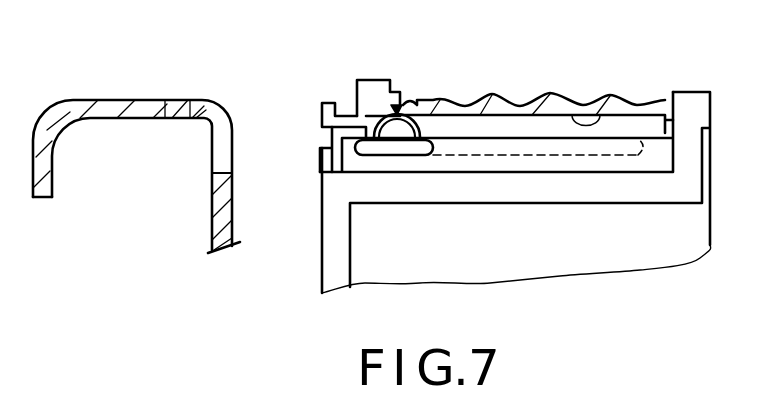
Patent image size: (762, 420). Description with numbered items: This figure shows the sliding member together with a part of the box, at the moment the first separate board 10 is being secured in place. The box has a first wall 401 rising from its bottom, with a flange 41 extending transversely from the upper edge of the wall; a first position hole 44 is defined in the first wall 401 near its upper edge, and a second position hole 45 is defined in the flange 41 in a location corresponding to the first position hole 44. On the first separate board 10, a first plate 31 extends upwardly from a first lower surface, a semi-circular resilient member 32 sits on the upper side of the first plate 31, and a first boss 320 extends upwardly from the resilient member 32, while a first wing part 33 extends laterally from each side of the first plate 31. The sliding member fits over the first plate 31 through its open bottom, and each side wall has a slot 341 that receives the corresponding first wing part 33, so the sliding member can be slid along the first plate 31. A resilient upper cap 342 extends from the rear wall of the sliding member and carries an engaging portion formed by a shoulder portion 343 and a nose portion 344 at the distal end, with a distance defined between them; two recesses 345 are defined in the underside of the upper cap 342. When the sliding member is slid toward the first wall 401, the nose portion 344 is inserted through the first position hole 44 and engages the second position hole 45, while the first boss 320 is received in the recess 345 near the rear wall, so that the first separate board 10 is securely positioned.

The first separate board 10 is at (489, 258).
The first plate 31 is at (660, 160).
The semi-circular resilient member 32 is at (407, 127).
The first wing part 33 is at (392, 148).
The flange 41 is at (99, 110).
The first position hole 44 is at (212, 148).
The second position hole 45 is at (176, 108).
The first boss 320 is at (398, 104).
The slot 341 is at (602, 147).
The resilient upper cap 342 is at (509, 107).
The shoulder portion 343 is at (398, 108).
The nose portion 344 is at (323, 103).
The recess 345 is at (565, 110).
The first wall 401 is at (220, 204).